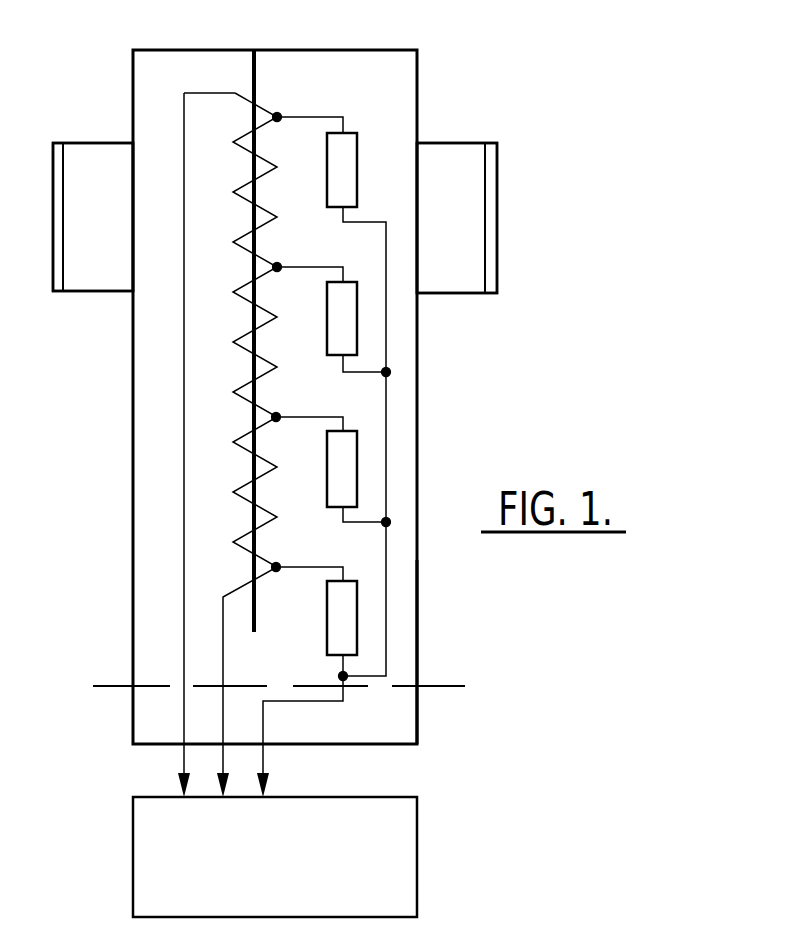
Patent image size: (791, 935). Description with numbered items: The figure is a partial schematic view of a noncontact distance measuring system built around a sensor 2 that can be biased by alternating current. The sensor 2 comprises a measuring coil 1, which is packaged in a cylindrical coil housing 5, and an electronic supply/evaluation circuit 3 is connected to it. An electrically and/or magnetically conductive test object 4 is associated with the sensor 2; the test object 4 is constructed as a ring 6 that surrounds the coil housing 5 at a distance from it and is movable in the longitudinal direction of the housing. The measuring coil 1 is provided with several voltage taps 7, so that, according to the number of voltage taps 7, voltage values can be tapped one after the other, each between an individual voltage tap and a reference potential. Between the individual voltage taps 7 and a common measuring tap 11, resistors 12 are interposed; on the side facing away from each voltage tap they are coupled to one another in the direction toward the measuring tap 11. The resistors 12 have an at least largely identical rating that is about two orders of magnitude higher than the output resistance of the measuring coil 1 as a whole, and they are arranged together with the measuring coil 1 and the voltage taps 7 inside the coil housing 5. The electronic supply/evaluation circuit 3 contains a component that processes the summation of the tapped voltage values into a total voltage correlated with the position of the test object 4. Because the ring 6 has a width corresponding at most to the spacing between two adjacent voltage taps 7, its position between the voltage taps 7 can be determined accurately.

The measuring coil 1 is at (257, 104).
The sensor 2 is at (352, 38).
The electronic supply/evaluation circuit 3 is at (300, 910).
The test object 4 is at (53, 158).
The coil housing 5 is at (417, 654).
The ring 6 is at (275, 194).
The voltage taps 7 is at (280, 116).
The measuring tap 11 is at (348, 704).
The resistors 12 is at (350, 176).